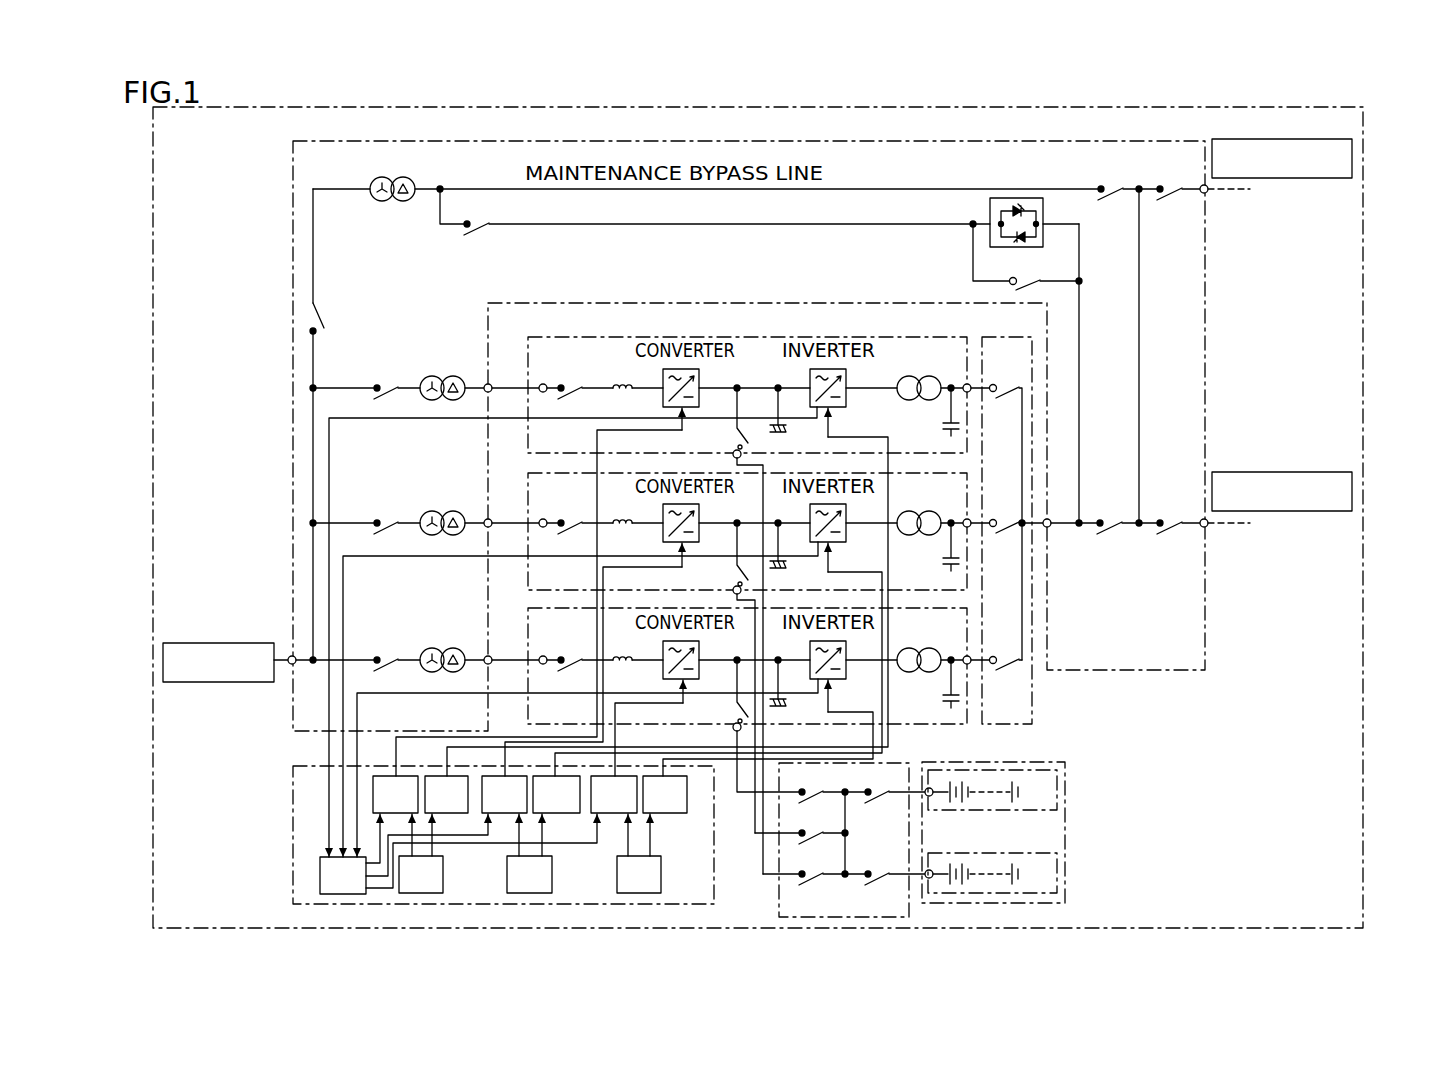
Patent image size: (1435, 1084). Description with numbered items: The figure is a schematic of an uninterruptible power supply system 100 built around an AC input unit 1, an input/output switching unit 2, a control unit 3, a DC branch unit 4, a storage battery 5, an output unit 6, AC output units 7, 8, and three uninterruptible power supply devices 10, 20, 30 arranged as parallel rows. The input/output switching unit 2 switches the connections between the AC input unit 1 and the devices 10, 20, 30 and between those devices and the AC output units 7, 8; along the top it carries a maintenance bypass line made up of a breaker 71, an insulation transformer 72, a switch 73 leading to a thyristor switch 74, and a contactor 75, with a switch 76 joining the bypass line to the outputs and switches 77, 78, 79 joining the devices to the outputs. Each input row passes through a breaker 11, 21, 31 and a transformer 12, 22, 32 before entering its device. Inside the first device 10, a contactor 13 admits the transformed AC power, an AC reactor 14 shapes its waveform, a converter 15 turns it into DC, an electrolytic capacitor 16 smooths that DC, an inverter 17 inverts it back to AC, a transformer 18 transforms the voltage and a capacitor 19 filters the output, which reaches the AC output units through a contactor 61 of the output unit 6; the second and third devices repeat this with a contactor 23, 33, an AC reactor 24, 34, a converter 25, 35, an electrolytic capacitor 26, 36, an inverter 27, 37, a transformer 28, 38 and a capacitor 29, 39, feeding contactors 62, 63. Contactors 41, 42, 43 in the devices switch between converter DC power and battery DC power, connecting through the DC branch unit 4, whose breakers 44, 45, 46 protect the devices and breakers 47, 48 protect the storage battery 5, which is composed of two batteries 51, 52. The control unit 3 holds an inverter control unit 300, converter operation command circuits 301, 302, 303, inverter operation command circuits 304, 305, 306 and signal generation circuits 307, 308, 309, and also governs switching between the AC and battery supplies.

The uninterruptible power supply system 100 is at (1363, 128).
The AC input unit 1 is at (218, 643).
The input/output switching unit 2 is at (440, 141).
The control unit 3 is at (293, 881).
The DC branch unit 4 is at (779, 893).
The storage battery 5 is at (955, 762).
The output unit 6 is at (1032, 705).
The AC output unit 7 is at (1292, 140).
The AC output unit 8 is at (1292, 473).
The uninterruptible power supply device 10 is at (540, 337).
The breaker 11 is at (385, 379).
The transformer 12 is at (442, 375).
The contactor 13 is at (570, 379).
The AC reactor 14 is at (621, 372).
The converter 15 is at (701, 378).
The electrolytic capacitor 16 is at (792, 416).
The inverter 17 is at (846, 395).
The transformer 18 is at (919, 373).
The capacitor 19 is at (936, 412).
The uninterruptible power supply device 20 is at (540, 473).
The breaker 21 is at (385, 514).
The transformer 22 is at (442, 510).
The contactor 23 is at (570, 514).
The AC reactor 24 is at (621, 507).
The converter 25 is at (701, 513).
The electrolytic capacitor 26 is at (792, 551).
The inverter 27 is at (846, 530).
The transformer 28 is at (919, 508).
The capacitor 29 is at (936, 547).
The uninterruptible power supply device 30 is at (540, 608).
The breaker 31 is at (385, 651).
The transformer 32 is at (442, 647).
The contactor 33 is at (570, 651).
The AC reactor 34 is at (621, 644).
The converter 35 is at (701, 650).
The electrolytic capacitor 36 is at (792, 689).
The inverter 37 is at (846, 667).
The transformer 38 is at (919, 645).
The capacitor 39 is at (936, 684).
The contactor 41 is at (728, 423).
The contactor 42 is at (728, 558).
The contactor 43 is at (728, 695).
The breaker 44 is at (810, 783).
The breaker 45 is at (810, 824).
The breaker 46 is at (810, 865).
The breaker 47 is at (876, 783).
The breaker 48 is at (876, 865).
The battery 51 is at (992, 790).
The battery 52 is at (992, 873).
The contactor 61 is at (1006, 510).
The contactor 62 is at (1008, 514).
The contactor 63 is at (1006, 651).
The breaker 71 is at (332, 318).
The transformer 72 is at (392, 176).
The switch 73 is at (475, 216).
The thyristor switch 74 is at (1032, 222).
The contactor 75 is at (1045, 272).
The switch 76 is at (1110, 180).
The switch 77 is at (1169, 180).
The switch 78 is at (1109, 514).
The switch 79 is at (1169, 514).
The inverter control unit 300 is at (343, 875).
The converter operation command circuit 301 is at (395, 794).
The converter operation command circuit 302 is at (504, 794).
The converter operation command circuit 303 is at (614, 794).
The inverter operation command circuit 304 is at (446, 794).
The inverter operation command circuit 305 is at (556, 794).
The inverter operation command circuit 306 is at (665, 794).
The signal generation circuit 307 is at (421, 874).
The signal generation circuit 308 is at (529, 874).
The signal generation circuit 309 is at (639, 874).